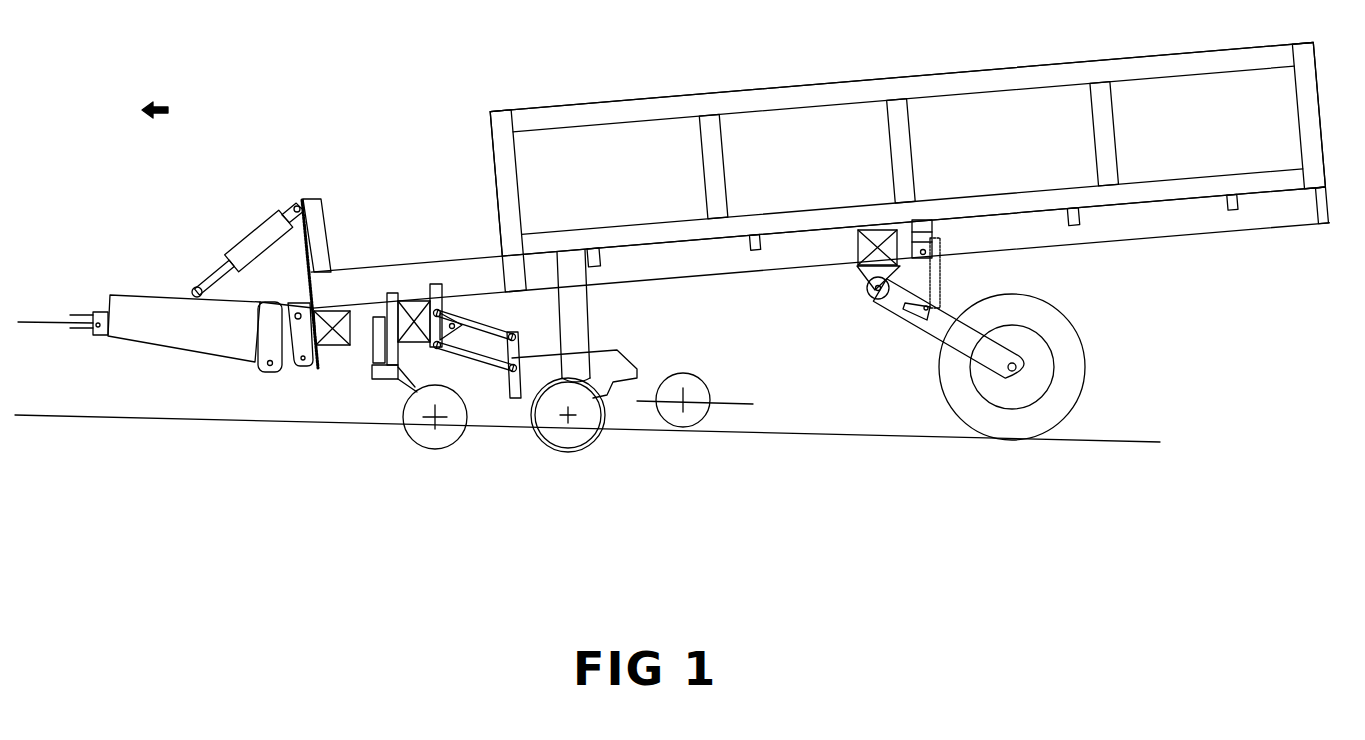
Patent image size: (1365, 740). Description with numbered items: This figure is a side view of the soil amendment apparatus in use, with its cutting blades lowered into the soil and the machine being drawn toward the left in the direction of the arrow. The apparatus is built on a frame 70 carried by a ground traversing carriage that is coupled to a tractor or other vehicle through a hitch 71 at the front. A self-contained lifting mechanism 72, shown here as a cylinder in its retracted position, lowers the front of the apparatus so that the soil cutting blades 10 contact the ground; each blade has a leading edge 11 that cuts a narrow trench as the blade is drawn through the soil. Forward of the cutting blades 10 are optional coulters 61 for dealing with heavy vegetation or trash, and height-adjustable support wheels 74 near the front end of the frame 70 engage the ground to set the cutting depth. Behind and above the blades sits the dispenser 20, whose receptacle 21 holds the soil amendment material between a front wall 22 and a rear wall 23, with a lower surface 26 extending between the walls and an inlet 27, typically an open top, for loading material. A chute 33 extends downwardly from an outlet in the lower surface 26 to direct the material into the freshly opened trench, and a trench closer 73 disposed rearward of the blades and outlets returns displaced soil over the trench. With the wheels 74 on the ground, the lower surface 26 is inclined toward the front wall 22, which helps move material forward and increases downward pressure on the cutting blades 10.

The soil cutting blade 10 is at (583, 422).
The leading edge 11 is at (553, 442).
The dispenser 20 is at (468, 153).
The receptacle 21 is at (908, 150).
The front wall 22 is at (503, 208).
The rear wall 23 is at (1312, 108).
The lower surface 26 is at (1138, 205).
The inlet 27 is at (795, 97).
The chute 33 is at (585, 321).
The coulters 61 is at (407, 430).
The frame 70 is at (362, 283).
The hitch 71 is at (100, 313).
The lifting mechanism 72 is at (247, 233).
The trench closer 73 is at (705, 386).
The support wheels 74 is at (527, 400).